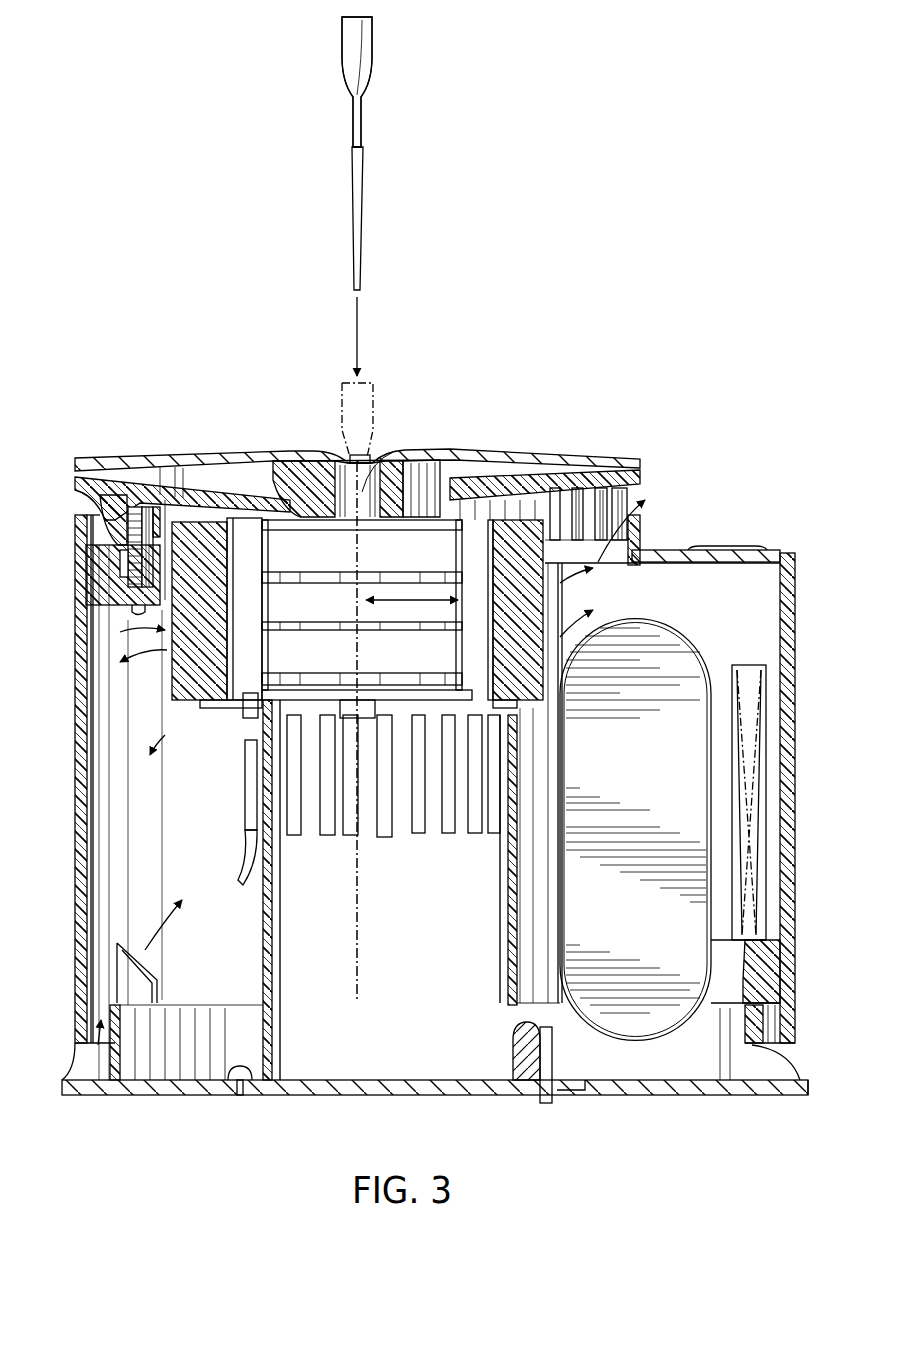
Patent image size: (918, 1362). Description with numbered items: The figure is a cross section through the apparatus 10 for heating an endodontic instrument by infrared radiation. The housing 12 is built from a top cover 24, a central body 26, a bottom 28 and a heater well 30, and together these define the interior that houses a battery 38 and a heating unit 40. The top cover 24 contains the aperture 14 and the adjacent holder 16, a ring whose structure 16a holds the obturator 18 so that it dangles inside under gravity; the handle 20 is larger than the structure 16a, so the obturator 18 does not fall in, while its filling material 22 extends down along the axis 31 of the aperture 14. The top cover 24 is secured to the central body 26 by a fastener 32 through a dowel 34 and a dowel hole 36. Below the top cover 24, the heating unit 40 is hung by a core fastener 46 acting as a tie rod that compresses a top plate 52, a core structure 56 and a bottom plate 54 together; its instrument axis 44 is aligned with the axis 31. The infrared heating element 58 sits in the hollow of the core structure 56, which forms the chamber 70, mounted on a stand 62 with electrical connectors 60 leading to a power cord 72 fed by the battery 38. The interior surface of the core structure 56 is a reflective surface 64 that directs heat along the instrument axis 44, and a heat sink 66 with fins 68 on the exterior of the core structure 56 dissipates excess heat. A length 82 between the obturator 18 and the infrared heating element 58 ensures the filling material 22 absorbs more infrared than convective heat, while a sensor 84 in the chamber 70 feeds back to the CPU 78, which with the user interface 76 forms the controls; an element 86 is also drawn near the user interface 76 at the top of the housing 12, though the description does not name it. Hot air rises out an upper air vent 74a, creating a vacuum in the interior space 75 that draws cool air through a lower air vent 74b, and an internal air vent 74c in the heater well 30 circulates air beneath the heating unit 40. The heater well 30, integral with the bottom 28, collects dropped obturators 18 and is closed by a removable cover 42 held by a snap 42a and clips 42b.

The apparatus 10 is at (115, 350).
The housing 12 is at (798, 582).
The aperture 14 is at (405, 480).
The holder 16 is at (335, 452).
The structure 16a is at (372, 462).
The obturator 18 is at (374, 382).
The handle 20 is at (341, 46).
The filling material 22 is at (364, 208).
The top cover 24 is at (92, 465).
The central body 26 is at (75, 820).
The bottom 28 is at (634, 1096).
The heater well 30 is at (275, 952).
The axis 31 is at (362, 922).
The fastener 32 is at (110, 608).
The dowel 34 is at (120, 556).
The dowel hole 36 is at (120, 590).
The battery 38 is at (700, 656).
The heating unit 40 is at (115, 645).
The removable cover 42 is at (393, 1097).
The snap 42a is at (560, 1060).
The clip 42b is at (240, 1065).
The instrument axis 44 is at (362, 922).
The core fastener 46 is at (380, 717).
The top plate 52 is at (203, 500).
The bottom plate 54 is at (228, 708).
The core structure 56 is at (470, 525).
The infrared heating element 58 is at (345, 615).
The electrical connectors 60 is at (247, 745).
The stand 62 is at (274, 518).
The reflective surface 64 is at (478, 650).
The heat sink 66 is at (520, 520).
The fins 68 is at (562, 590).
The chamber 70 is at (362, 664).
The power cord 72 is at (242, 845).
The upper air vent 74a is at (640, 494).
The lower air vent 74b is at (103, 1047).
The internal air vent 74c is at (384, 837).
The interior space 75 is at (163, 817).
The user interface 76 is at (724, 548).
The CPU 78 is at (730, 770).
The length 82 is at (412, 604).
The sensor 84 is at (270, 562).
The button 86 is at (742, 547).